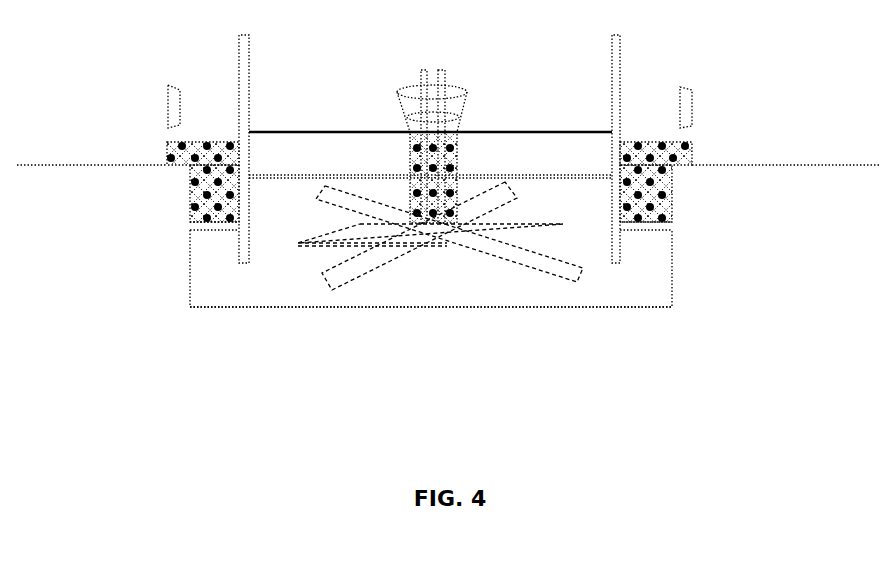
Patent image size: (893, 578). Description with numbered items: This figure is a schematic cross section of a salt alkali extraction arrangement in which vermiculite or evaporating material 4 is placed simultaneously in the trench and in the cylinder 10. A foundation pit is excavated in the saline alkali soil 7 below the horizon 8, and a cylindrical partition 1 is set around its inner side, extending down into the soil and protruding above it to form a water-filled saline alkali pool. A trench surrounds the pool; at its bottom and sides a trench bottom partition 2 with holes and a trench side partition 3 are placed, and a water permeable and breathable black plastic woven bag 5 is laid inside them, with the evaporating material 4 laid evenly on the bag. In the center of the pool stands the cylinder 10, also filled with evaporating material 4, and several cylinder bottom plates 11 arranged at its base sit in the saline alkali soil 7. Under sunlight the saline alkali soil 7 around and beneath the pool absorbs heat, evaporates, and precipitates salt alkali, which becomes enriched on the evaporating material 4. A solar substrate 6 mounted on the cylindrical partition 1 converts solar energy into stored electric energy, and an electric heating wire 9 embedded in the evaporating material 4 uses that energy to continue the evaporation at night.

The cylindrical partition 1 is at (240, 70).
The trench bottom partition 2 is at (200, 232).
The trench side partition 3 is at (190, 172).
The vermiculite or evaporating material 4 is at (190, 196).
The black plastic woven bag 5 is at (192, 226).
The solar substrate 6 is at (170, 92).
The saline alkali soil 7 is at (518, 297).
The horizon 8 is at (88, 162).
The heating wire 9 is at (421, 72).
The cylinder 10 is at (455, 150).
The cylinder bottom plate 11 is at (588, 290).